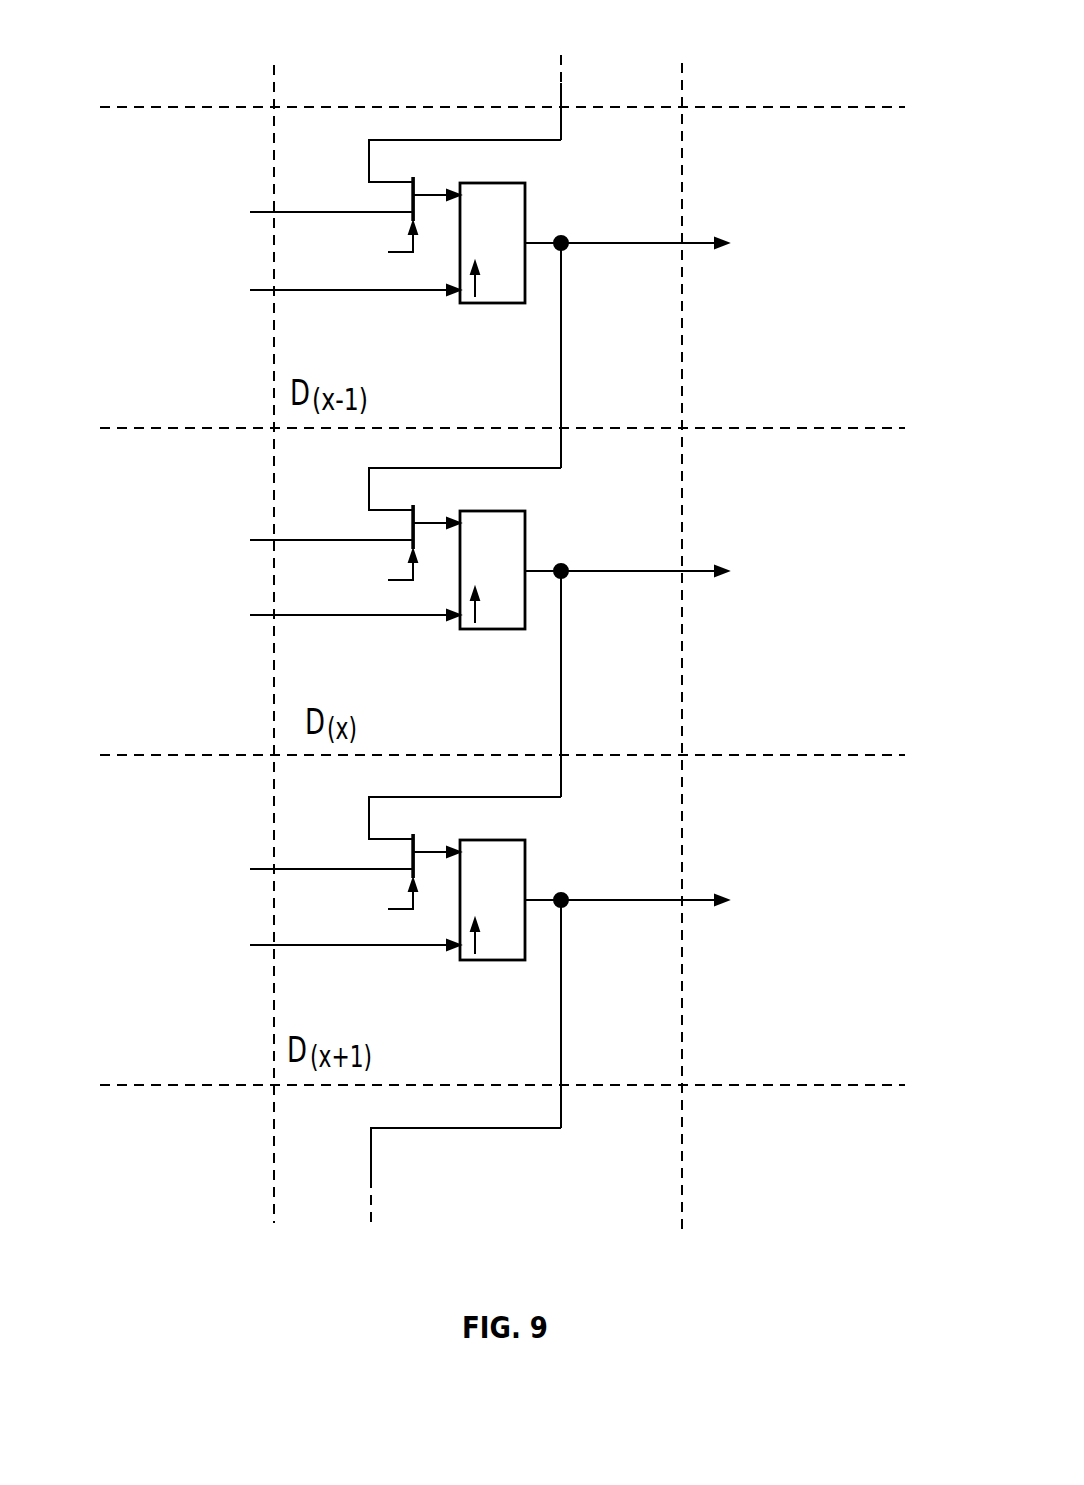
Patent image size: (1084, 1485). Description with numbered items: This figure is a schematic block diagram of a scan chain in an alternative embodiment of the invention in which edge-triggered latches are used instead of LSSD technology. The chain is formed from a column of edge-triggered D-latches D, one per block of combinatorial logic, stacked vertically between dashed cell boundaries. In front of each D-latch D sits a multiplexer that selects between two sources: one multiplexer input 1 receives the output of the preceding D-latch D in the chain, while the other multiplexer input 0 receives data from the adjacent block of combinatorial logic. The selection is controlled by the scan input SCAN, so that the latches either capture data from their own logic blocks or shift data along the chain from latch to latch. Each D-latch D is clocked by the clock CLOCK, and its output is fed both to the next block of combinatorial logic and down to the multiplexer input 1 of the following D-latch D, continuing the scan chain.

The multiplexer input 1 is at (465, 495).
The multiplexer input 0 is at (265, 543).
The scan input SCAN is at (359, 572).
The clock CLOCK is at (301, 617).
The edge-triggered D-latch D is at (663, 568).